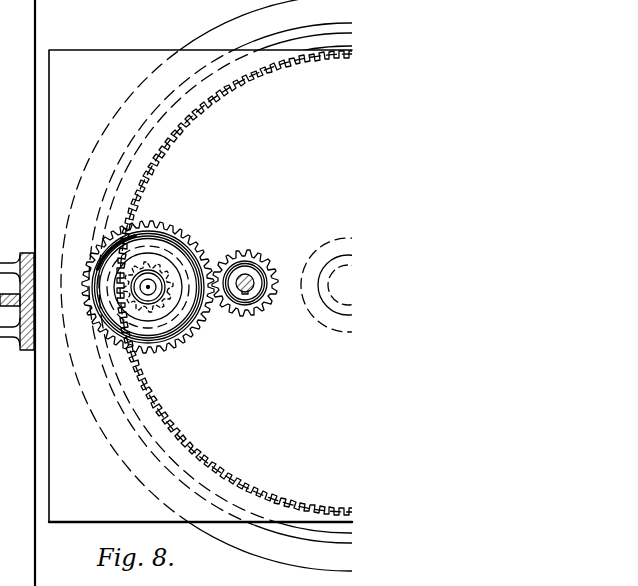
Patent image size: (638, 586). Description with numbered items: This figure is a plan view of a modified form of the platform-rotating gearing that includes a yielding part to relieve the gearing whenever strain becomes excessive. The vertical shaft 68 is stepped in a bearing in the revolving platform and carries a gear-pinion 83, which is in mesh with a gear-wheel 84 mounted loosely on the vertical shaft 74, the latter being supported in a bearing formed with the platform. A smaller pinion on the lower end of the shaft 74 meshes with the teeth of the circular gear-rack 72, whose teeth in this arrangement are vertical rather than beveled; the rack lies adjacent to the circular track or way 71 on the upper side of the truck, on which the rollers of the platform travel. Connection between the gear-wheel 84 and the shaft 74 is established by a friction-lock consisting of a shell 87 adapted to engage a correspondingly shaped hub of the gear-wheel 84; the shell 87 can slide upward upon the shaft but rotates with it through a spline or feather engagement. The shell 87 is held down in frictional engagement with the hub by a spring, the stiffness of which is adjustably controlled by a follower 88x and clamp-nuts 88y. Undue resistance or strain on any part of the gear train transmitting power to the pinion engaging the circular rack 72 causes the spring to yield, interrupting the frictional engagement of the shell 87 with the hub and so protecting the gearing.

The track or way 71 is at (349, 285).
The circular rack-gear 72 is at (257, 76).
The gear-wheel 84 is at (197, 252).
The shell 87 is at (185, 303).
The clamp-nuts 88y is at (152, 270).
The follower 88x is at (149, 290).
The shaft 74 is at (151, 289).
The gear-pinion 83 is at (262, 314).
The vertical shaft 68 is at (247, 280).